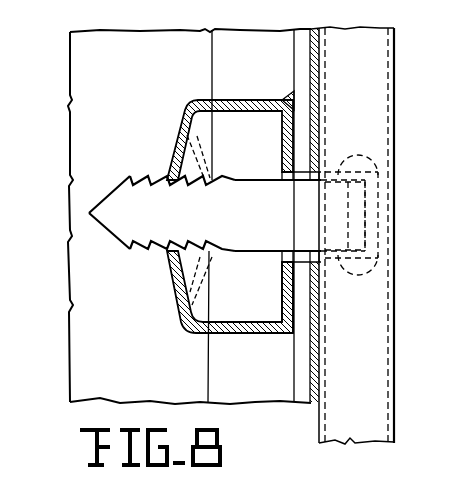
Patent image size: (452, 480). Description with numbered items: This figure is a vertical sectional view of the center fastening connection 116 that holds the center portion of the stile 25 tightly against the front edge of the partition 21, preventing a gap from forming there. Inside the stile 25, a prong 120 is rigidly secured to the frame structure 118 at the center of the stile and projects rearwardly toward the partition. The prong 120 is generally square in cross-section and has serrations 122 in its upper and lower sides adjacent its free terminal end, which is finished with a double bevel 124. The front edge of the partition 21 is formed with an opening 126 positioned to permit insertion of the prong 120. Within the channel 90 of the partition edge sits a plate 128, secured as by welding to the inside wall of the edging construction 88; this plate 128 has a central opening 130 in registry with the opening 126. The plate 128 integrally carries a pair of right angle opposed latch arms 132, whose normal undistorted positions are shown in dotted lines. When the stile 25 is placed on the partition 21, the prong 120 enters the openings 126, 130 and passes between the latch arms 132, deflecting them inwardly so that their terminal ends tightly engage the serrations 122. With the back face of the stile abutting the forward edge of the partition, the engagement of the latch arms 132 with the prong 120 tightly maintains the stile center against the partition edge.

The partition 21 is at (64, 381).
The stile 25 is at (342, 40).
The edging construction 88 is at (298, 379).
The channel 90 is at (222, 362).
The center fastening connection 116 is at (174, 318).
The frame structure 118 is at (380, 157).
The prong 120 is at (252, 200).
The serrations 122 is at (166, 172).
The double bevel 124 is at (100, 206).
The opening 126 is at (300, 170).
The plate 128 is at (281, 293).
The central opening 130 is at (285, 256).
The latch arms 132 is at (172, 152).